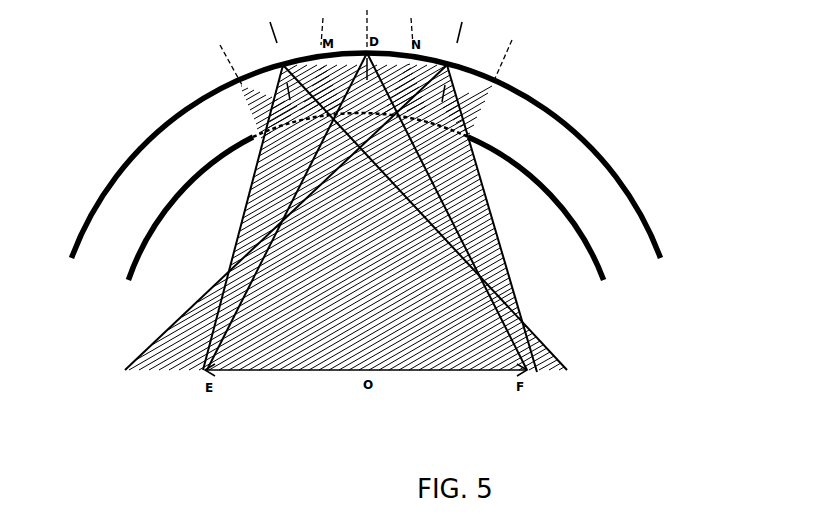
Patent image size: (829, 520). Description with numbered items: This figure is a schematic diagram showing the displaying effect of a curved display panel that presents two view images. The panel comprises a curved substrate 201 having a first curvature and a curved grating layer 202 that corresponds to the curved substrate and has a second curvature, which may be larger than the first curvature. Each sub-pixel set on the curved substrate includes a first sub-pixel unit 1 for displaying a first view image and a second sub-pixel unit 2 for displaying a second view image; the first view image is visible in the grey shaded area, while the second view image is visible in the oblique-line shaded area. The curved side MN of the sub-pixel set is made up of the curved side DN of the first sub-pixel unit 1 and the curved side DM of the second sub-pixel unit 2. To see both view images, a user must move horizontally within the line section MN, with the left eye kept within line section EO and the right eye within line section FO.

The curved substrate 201 is at (650, 223).
The curved grating layer 202 is at (598, 267).
The first sub-pixel unit 1 is at (377, 43).
The second sub-pixel unit 2 is at (366, 57).